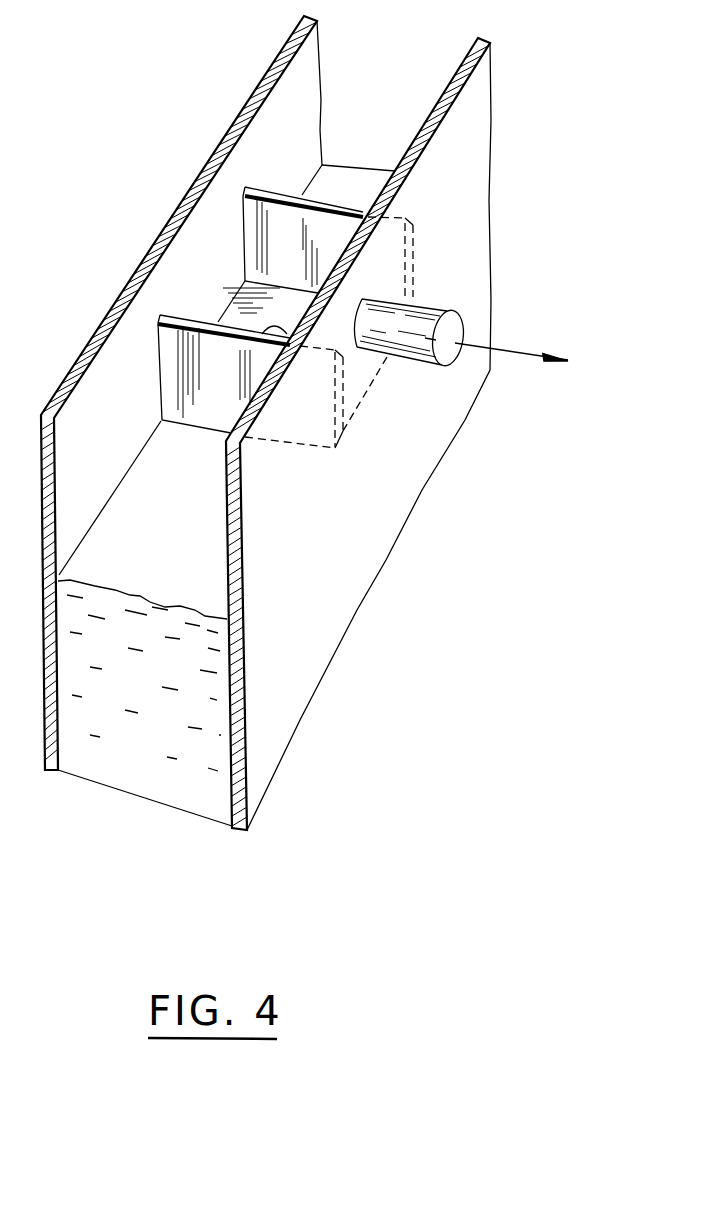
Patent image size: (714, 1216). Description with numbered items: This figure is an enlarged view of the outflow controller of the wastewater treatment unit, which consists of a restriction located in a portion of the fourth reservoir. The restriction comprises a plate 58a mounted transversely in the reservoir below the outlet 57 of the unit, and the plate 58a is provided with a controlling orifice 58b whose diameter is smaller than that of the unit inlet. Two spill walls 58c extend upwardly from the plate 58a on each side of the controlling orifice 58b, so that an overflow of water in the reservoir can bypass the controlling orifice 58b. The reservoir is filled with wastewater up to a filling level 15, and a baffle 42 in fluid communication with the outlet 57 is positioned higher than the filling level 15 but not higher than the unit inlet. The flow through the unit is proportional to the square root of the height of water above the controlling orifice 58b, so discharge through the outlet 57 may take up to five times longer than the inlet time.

The baffle 42 is at (170, 282).
The filling level 15 is at (181, 518).
The outlet 57 is at (466, 304).
The plate 58a is at (252, 313).
The controlling orifice 58b is at (275, 323).
The spill walls 58c is at (327, 207).